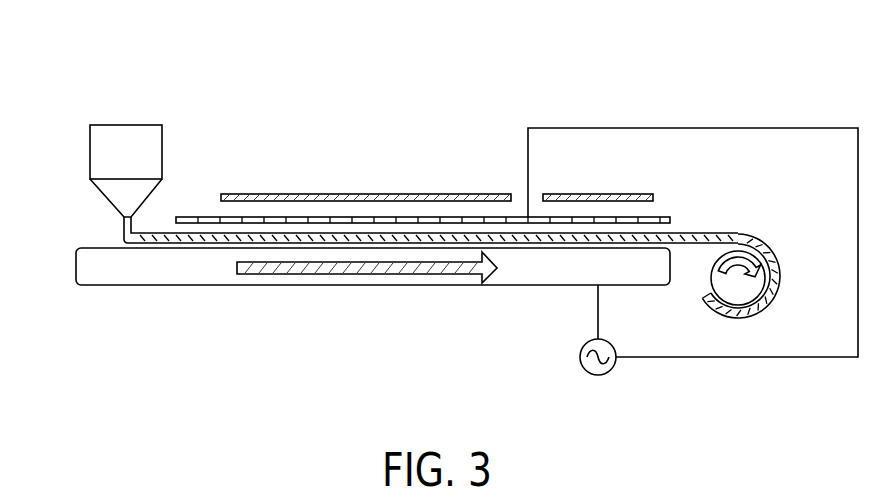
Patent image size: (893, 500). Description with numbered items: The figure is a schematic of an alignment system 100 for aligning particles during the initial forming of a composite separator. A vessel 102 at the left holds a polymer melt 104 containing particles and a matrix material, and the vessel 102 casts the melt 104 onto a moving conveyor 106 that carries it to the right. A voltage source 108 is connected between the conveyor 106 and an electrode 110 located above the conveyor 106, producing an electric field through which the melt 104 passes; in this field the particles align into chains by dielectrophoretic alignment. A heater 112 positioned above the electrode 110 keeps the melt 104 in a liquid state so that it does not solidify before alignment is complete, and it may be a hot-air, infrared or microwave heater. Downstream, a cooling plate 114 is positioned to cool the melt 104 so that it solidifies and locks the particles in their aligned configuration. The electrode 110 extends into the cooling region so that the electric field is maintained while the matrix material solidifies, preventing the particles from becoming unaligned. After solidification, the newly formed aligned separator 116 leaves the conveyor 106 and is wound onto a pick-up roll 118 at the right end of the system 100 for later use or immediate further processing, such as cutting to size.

The alignment system 100 is at (341, 76).
The vessel 102 is at (100, 147).
The polymer melt 104 is at (121, 231).
The conveyor 106 is at (85, 266).
The voltage source 108 is at (598, 375).
The electrode 110 is at (190, 217).
The heater 112 is at (330, 194).
The cooling plate 114 is at (613, 195).
The aligned separator 116 is at (737, 235).
The pick-up roll 118 is at (742, 290).